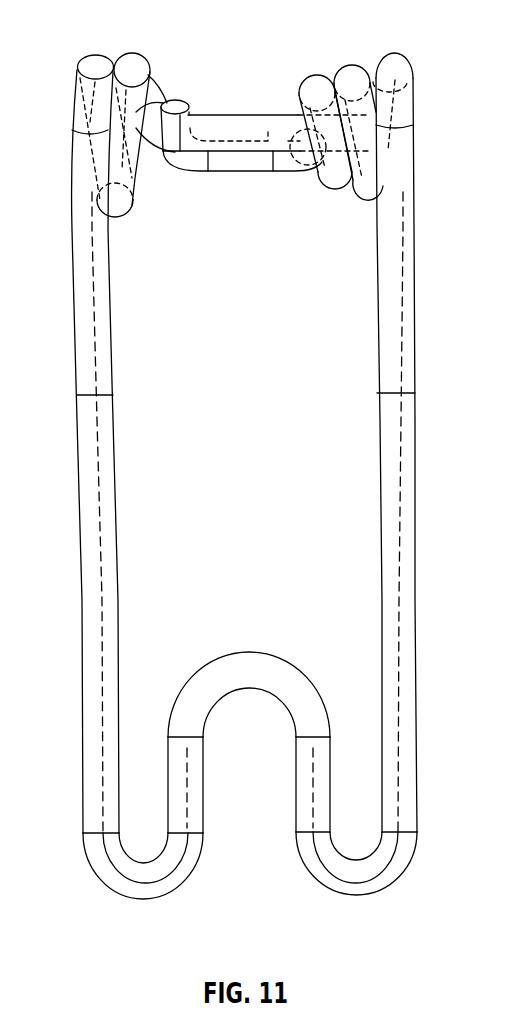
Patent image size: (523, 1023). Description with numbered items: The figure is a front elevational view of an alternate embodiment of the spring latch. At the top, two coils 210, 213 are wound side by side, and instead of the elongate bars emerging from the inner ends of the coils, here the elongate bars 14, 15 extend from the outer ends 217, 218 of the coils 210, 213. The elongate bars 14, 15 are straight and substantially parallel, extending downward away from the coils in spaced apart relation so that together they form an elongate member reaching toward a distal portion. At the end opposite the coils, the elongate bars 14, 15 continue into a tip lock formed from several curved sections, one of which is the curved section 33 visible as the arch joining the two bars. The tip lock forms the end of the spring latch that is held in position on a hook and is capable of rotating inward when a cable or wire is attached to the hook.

The elongate bar 14 is at (95, 712).
The elongate bar 15 is at (400, 592).
The curved section 33 is at (240, 670).
The coil 210 is at (108, 48).
The coil 213 is at (397, 47).
The outer end 217 is at (80, 132).
The outer end 218 is at (412, 126).